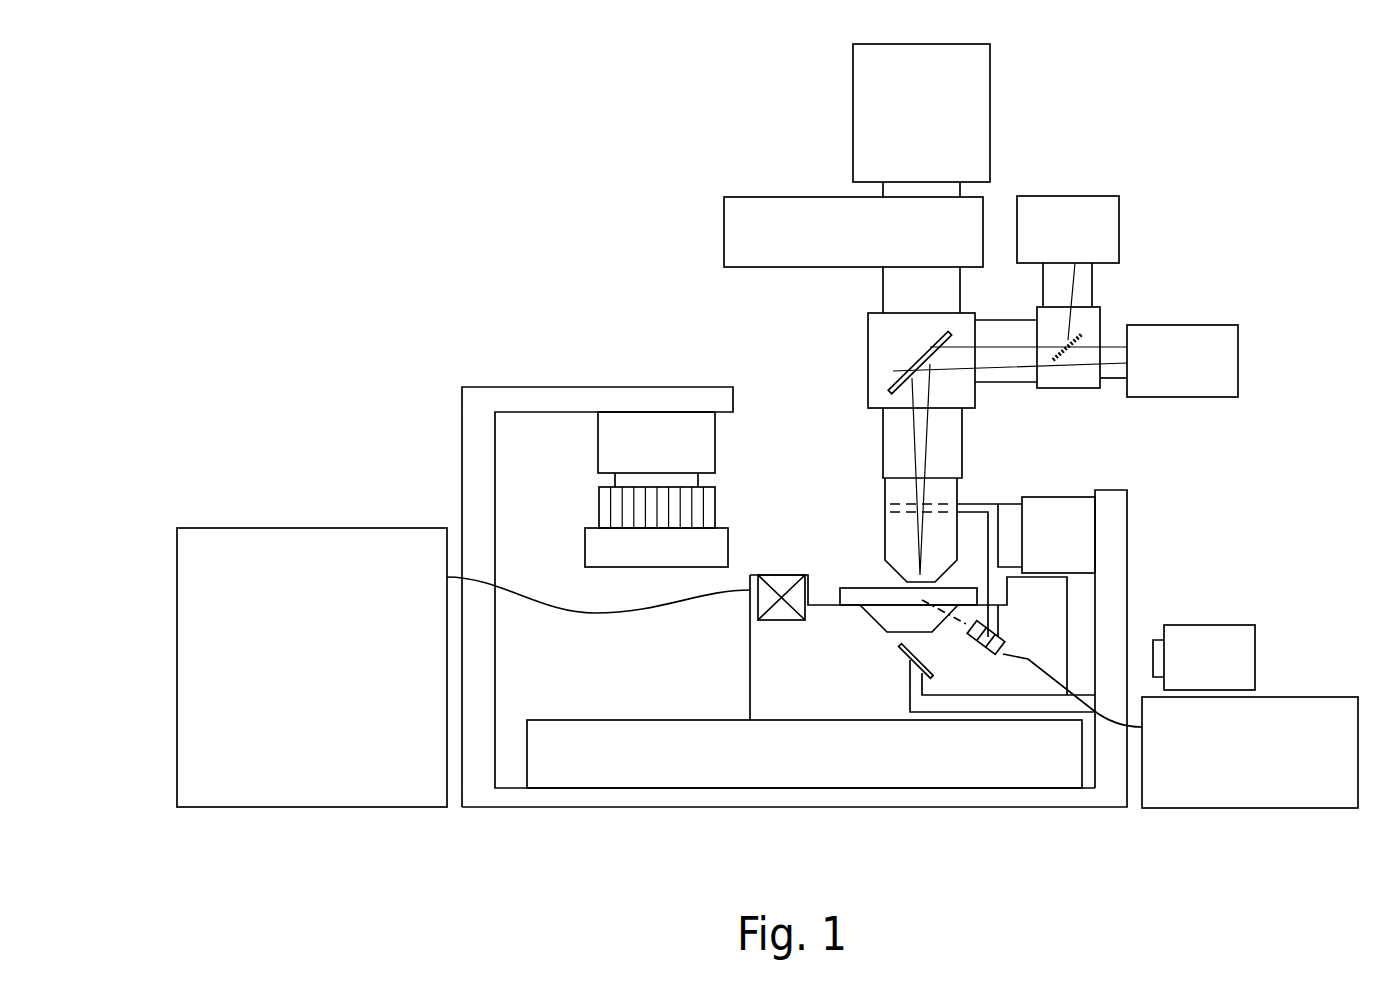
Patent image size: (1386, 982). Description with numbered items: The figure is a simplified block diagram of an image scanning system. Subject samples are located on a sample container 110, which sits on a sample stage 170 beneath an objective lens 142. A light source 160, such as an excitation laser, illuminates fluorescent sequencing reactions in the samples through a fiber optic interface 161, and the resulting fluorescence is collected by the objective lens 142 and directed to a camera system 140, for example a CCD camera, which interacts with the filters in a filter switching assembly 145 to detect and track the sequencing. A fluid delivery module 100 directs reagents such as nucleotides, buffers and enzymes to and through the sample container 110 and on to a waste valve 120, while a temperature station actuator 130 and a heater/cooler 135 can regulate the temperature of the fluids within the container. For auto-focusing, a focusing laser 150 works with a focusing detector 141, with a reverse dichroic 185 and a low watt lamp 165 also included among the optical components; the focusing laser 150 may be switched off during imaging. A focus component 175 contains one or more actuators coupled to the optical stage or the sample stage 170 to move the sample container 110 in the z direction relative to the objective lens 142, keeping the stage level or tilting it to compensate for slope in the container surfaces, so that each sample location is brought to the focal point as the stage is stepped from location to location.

The fluid delivery module 100 is at (293, 677).
The sample container 110 is at (989, 632).
The waste valve 120 is at (782, 575).
The temperature station actuator 130 is at (637, 454).
The heater/cooler 135 is at (637, 558).
The camera system 140 is at (902, 125).
The focusing detector 141 is at (1049, 245).
The objective lens 142 is at (887, 513).
The filter switching assembly 145 is at (834, 245).
The focusing laser 150 is at (1164, 375).
The light source 160 is at (1231, 762).
The fiber optic interface 161 is at (1008, 641).
The low watt lamp 165 is at (1190, 668).
The sample stage 170 is at (786, 763).
The focus component 175 is at (1039, 545).
The reverse dichroic 185 is at (893, 371).